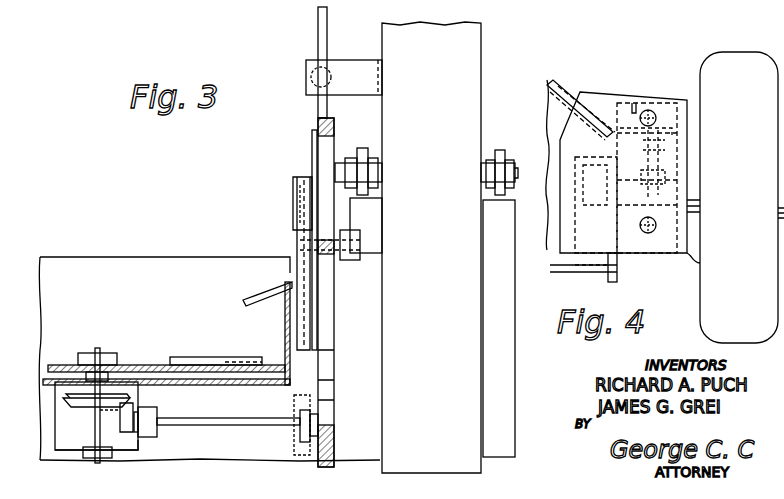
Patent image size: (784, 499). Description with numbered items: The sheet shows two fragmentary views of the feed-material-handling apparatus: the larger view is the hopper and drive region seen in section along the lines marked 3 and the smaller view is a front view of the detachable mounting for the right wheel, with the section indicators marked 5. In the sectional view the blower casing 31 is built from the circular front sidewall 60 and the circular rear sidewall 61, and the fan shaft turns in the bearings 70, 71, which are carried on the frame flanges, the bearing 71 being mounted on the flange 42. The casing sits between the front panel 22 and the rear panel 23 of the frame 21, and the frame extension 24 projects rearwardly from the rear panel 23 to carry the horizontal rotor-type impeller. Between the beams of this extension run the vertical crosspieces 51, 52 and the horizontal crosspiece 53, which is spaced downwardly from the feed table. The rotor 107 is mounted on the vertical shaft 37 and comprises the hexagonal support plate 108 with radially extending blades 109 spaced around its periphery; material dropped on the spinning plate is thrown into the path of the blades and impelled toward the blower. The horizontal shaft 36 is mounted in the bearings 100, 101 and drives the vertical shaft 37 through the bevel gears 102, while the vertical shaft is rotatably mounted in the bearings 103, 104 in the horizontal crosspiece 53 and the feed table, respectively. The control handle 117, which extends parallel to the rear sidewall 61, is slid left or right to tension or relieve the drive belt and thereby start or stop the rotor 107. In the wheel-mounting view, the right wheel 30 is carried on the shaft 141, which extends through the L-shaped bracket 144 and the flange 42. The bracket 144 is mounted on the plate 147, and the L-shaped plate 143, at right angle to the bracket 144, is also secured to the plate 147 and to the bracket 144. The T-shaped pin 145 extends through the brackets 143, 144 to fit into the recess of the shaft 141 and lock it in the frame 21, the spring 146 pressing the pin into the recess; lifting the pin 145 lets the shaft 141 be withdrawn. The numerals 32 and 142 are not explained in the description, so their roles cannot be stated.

In FIG. 3, the frame extension 24 is at (75, 4).
In FIG. 3, the control handle 117 is at (316, 27).
In FIG. 3, the rear sidewall 61 is at (382, 30).
In FIG. 3, the front sidewall 60 is at (483, 46).
In FIG. 3, the blower casing 31 is at (482, 66).
In FIG. 3, the bearing 71 is at (362, 148).
In FIG. 3, the bearing 70 is at (514, 128).
In FIG. 3, the rear panel 23 is at (372, 384).
In FIG. 3, the front panel 22 is at (517, 380).
In FIG. 3, the bearing 104 is at (78, 360).
In FIG. 3, the bearing 103 is at (85, 456).
In FIG. 3, the bevel gears 102 is at (120, 400).
In FIG. 3, the vertical crosspiece 52 is at (132, 405).
In FIG. 3, the bearing 101 is at (150, 410).
In FIG. 3, the vertical shaft 37 is at (92, 425).
In FIG. 3, the horizontal crosspiece 53 is at (125, 452).
In FIG. 3, the shaft 36 is at (190, 426).
In FIG. 3, the bearing 100 is at (298, 430).
In FIG. 3, the rotor 107 is at (196, 335).
In FIG. 3, the blades 109 is at (229, 360).
In FIG. 3, the support plate 108 is at (205, 372).
In FIG. 3, the vertical crosspiece 51 is at (312, 366).
In FIG. 4, the section line 3- 3 is at (618, 8).
In FIG. 4, the section line 5- 5 is at (693, 77).
In FIG. 4, the wheel 30 is at (750, 7).
In FIG. 4, the cylinder top 32 is at (757, 62).
In FIG. 4, the shaft 141 is at (778, 203).
In FIG. 4, the frame 21 is at (612, 82).
In FIG. 4, the T-shaped pin 145 is at (632, 110).
In FIG. 4, the L-shaped plate 143 is at (672, 135).
In FIG. 4, the spring 146 is at (677, 150).
In FIG. 4, the L-shaped bracket 144 is at (690, 174).
In FIG. 4, the plate 147 is at (693, 256).
In FIG. 4, the base bracket 142 is at (567, 278).
In FIG. 4, the flange 42 is at (620, 268).